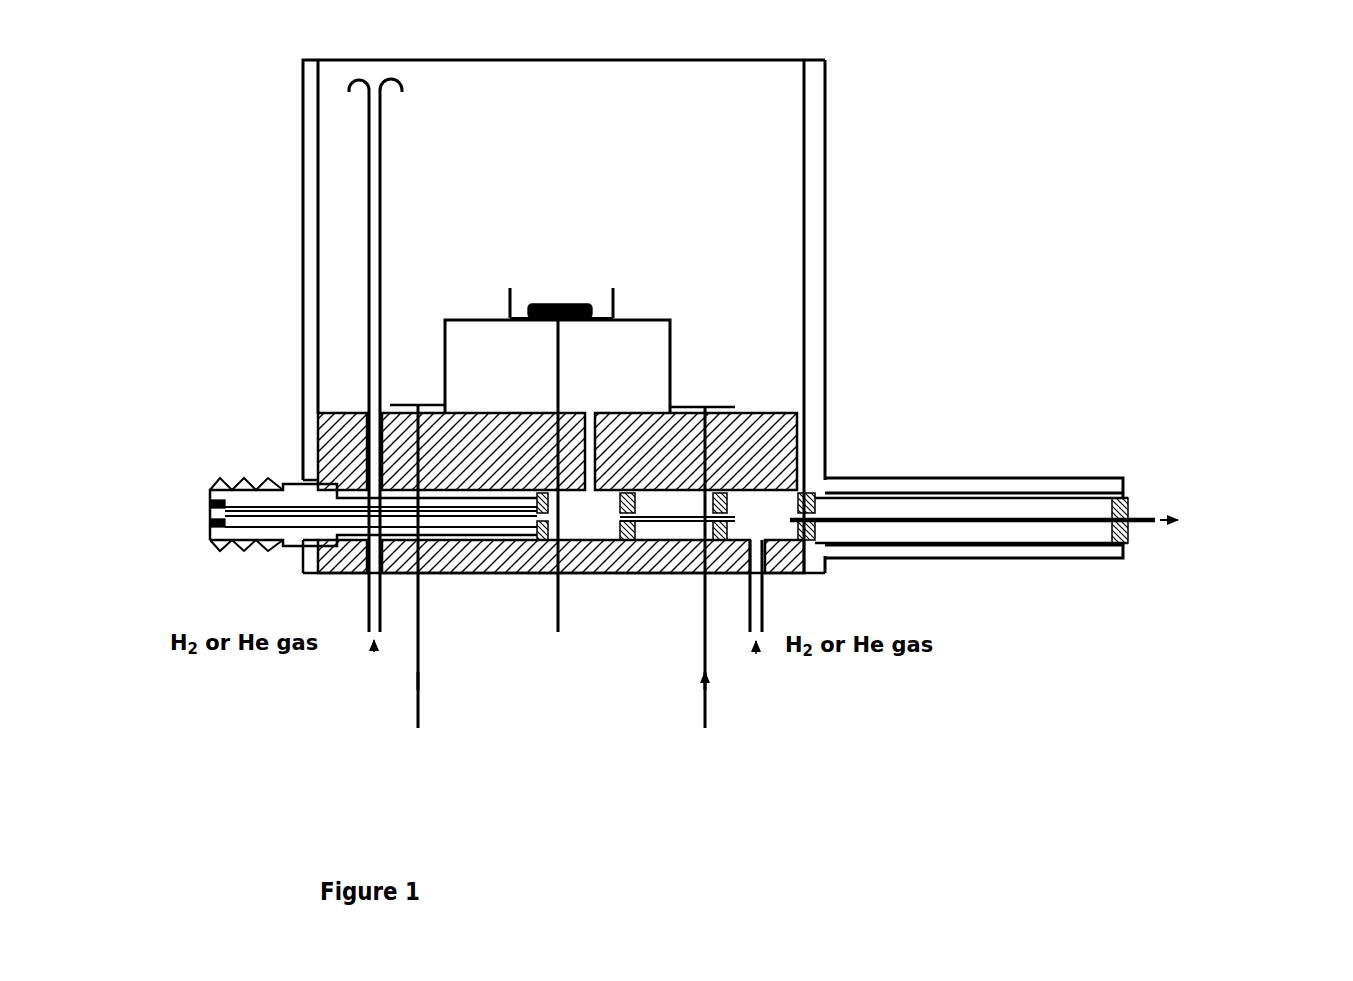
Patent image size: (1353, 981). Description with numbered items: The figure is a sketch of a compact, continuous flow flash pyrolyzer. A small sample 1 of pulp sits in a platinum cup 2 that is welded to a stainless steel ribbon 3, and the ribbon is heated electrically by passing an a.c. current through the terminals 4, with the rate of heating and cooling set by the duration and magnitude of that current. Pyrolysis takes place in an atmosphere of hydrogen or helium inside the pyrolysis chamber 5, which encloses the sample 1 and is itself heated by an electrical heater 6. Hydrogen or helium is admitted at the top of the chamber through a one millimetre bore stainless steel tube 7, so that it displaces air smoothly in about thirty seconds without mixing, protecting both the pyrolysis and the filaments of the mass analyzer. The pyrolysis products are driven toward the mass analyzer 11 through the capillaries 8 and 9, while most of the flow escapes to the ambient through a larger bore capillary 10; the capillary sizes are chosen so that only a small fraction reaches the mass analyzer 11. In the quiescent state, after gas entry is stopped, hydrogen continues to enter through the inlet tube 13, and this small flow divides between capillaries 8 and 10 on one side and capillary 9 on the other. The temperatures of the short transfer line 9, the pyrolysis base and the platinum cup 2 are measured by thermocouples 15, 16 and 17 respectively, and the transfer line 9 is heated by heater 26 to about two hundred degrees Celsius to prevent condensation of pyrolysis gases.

The sample 1 is at (577, 278).
The platinum cup 2 is at (615, 311).
The stainless steel ribbon 3 is at (674, 362).
The terminals 4 is at (572, 590).
The pyrolysis chamber 5 is at (598, 59).
The electrical heater 6 is at (828, 246).
The stainless steel tube 7 is at (366, 210).
The capillary 8 is at (675, 525).
The capillary (transfer line) 9 is at (995, 527).
The larger bore capillary 10 is at (459, 519).
The mass analyzer 11 is at (1234, 551).
The inlet tube 13 is at (767, 608).
The thermocouple 15 is at (951, 491).
The thermocouple 16 is at (306, 471).
The thermocouple 17 is at (580, 495).
The heater 26 is at (890, 476).